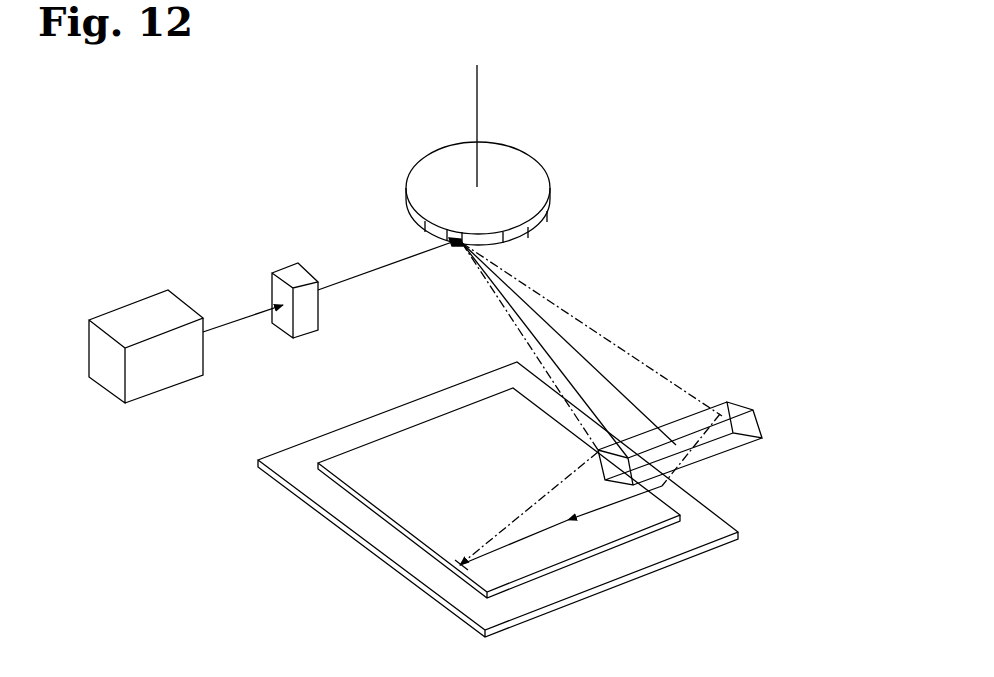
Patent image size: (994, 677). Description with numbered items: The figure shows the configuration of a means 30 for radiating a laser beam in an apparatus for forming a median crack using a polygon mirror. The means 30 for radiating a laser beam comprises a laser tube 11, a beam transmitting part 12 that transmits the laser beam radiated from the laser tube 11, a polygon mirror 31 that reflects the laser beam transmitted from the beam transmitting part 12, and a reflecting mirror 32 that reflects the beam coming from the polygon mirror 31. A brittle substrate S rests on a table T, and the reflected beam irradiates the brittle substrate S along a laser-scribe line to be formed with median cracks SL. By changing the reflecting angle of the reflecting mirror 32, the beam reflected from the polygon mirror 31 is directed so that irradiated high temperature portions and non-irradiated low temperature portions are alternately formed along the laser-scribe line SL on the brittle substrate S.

The laser tube 11 is at (133, 315).
The beam transmitting part 12 is at (307, 328).
The means for radiating a laser beam 30 is at (619, 315).
The polygon mirror 31 is at (505, 150).
The reflecting mirror 32 is at (745, 427).
The brittle substrate S is at (400, 450).
The table T is at (720, 513).
The laser-scribe line to be formed with median cracks SL is at (495, 553).